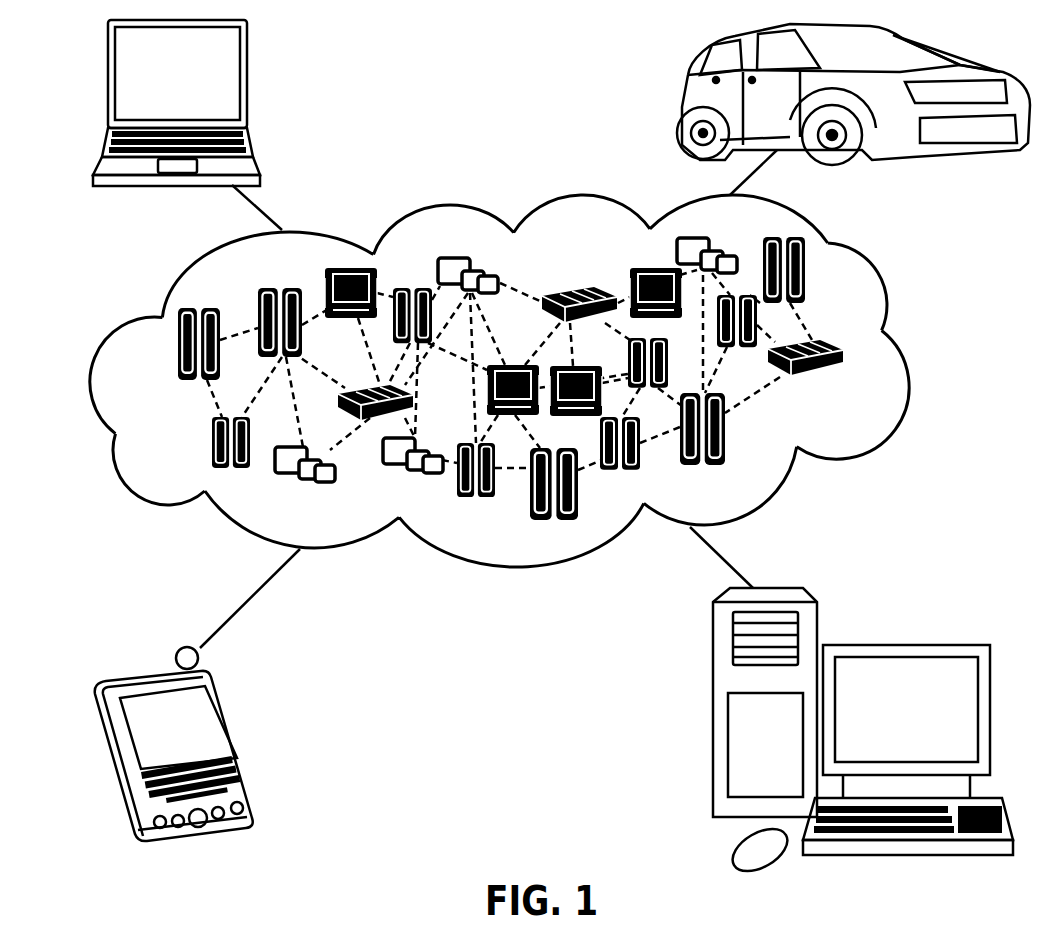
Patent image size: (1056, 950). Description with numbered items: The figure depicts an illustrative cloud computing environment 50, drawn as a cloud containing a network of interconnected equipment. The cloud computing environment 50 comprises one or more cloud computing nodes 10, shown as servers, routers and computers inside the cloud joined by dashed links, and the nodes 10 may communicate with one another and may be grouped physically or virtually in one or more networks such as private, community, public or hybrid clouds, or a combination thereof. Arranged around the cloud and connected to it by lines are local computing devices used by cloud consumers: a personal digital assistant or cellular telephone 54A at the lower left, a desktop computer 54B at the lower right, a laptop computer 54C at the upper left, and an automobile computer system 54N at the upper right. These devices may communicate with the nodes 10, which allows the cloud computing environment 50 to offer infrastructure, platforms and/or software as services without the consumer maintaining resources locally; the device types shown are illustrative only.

The cloud computing nodes 10 is at (858, 391).
The cloud computing environment 50 is at (903, 353).
The personal digital assistant (PDA) or cellular telephone 54A is at (237, 741).
The desktop computer 54B is at (900, 645).
The laptop computer 54C is at (247, 85).
The automobile computer system 54N is at (683, 100).